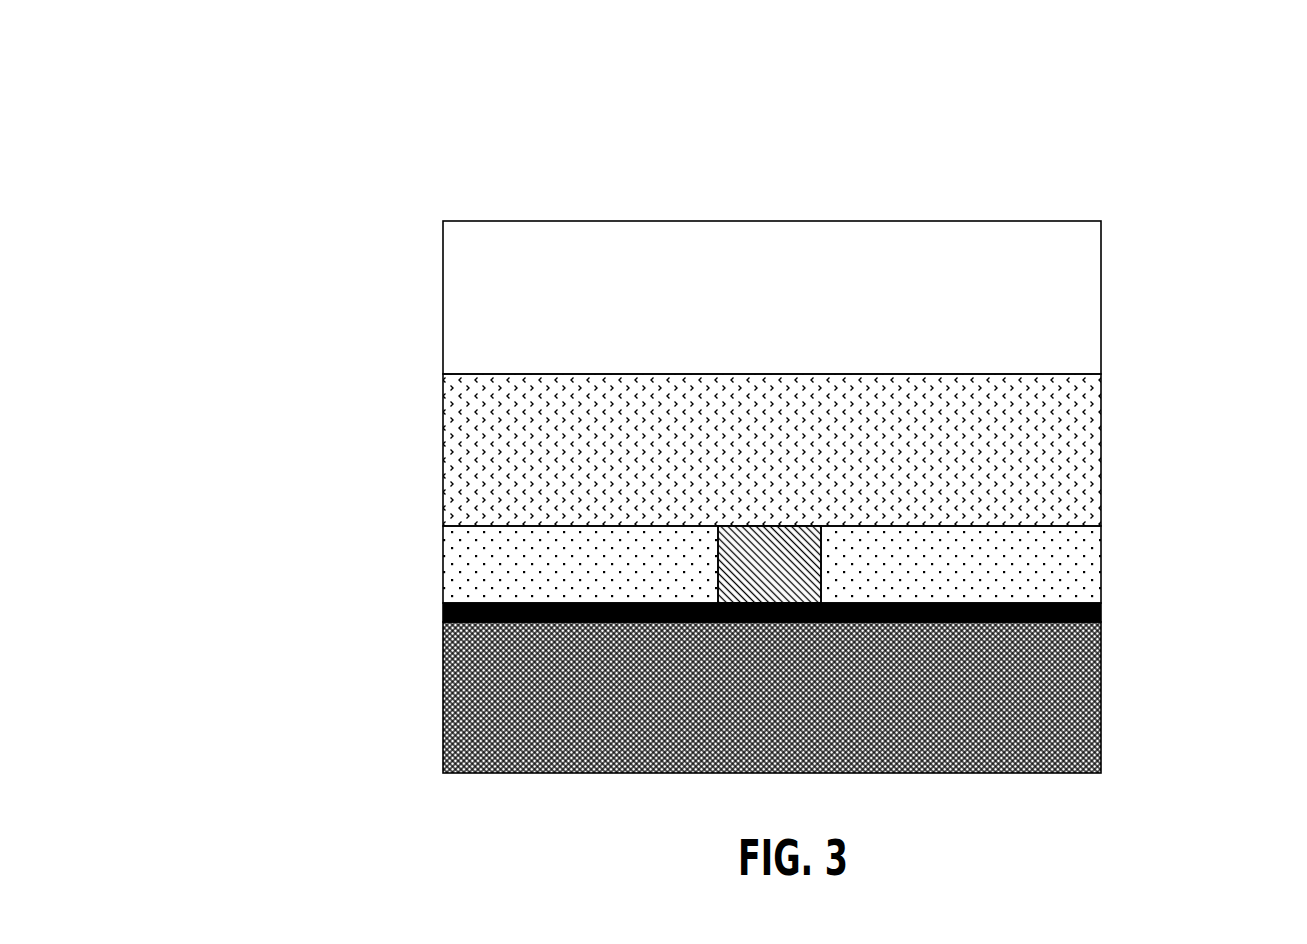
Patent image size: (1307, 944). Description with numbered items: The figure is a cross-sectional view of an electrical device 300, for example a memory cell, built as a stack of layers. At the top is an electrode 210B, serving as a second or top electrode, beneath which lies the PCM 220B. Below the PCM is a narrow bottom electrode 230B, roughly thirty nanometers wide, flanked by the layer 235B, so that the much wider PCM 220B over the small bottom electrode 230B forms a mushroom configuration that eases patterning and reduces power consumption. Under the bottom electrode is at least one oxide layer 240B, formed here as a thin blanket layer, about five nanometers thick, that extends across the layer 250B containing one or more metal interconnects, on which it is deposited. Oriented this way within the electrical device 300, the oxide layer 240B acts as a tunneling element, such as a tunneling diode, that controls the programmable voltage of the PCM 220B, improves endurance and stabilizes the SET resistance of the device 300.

The electrical device 300 is at (312, 80).
The electrode 210B is at (772, 297).
The PCM 220B is at (772, 450).
The bottom electrode 230B is at (769, 564).
The layer 235B is at (1103, 547).
The oxide layer 240B is at (1103, 614).
The layer with one or more metal interconnects 250B is at (772, 697).